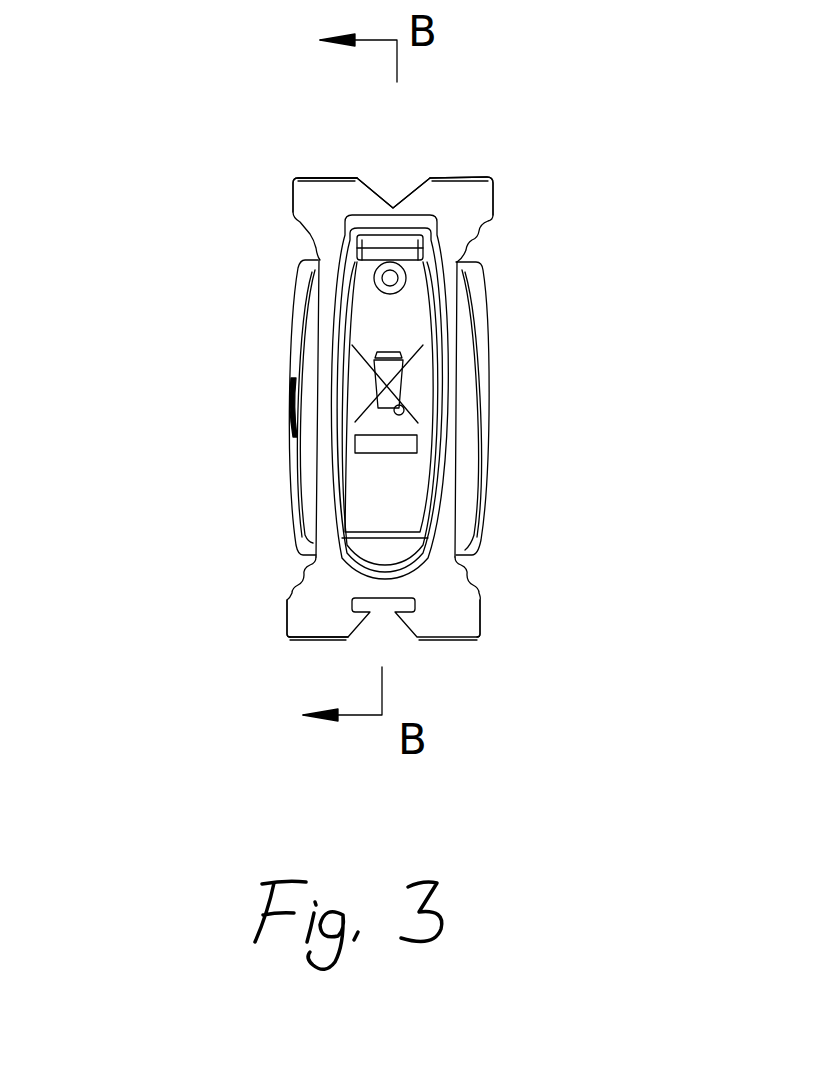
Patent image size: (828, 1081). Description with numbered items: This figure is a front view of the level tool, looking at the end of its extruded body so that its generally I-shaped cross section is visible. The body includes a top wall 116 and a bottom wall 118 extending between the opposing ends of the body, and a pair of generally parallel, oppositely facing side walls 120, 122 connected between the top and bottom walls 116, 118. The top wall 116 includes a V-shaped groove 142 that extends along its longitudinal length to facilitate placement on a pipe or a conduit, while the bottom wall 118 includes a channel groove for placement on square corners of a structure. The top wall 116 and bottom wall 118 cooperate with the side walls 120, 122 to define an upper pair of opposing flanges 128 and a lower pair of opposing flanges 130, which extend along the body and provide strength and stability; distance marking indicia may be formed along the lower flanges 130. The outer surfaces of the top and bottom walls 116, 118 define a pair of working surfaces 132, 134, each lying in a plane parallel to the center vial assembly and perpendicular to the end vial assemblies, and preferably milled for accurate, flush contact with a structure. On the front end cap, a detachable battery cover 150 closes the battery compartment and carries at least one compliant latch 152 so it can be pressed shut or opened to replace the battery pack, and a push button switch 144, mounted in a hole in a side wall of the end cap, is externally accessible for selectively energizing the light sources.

The top wall 116 is at (366, 179).
The bottom wall 118 is at (405, 629).
The side wall 120 is at (256, 407).
The side wall 122 is at (532, 408).
The upper pair of opposing flanges 128 is at (391, 195).
The lower pair of opposing flanges 130 is at (391, 618).
The working surface 132 is at (344, 135).
The working surface 134 is at (284, 678).
The V-shaped groove 142 is at (442, 149).
The switch 144 is at (199, 405).
The battery cover 150 is at (470, 397).
The compliant latch 152 is at (491, 243).